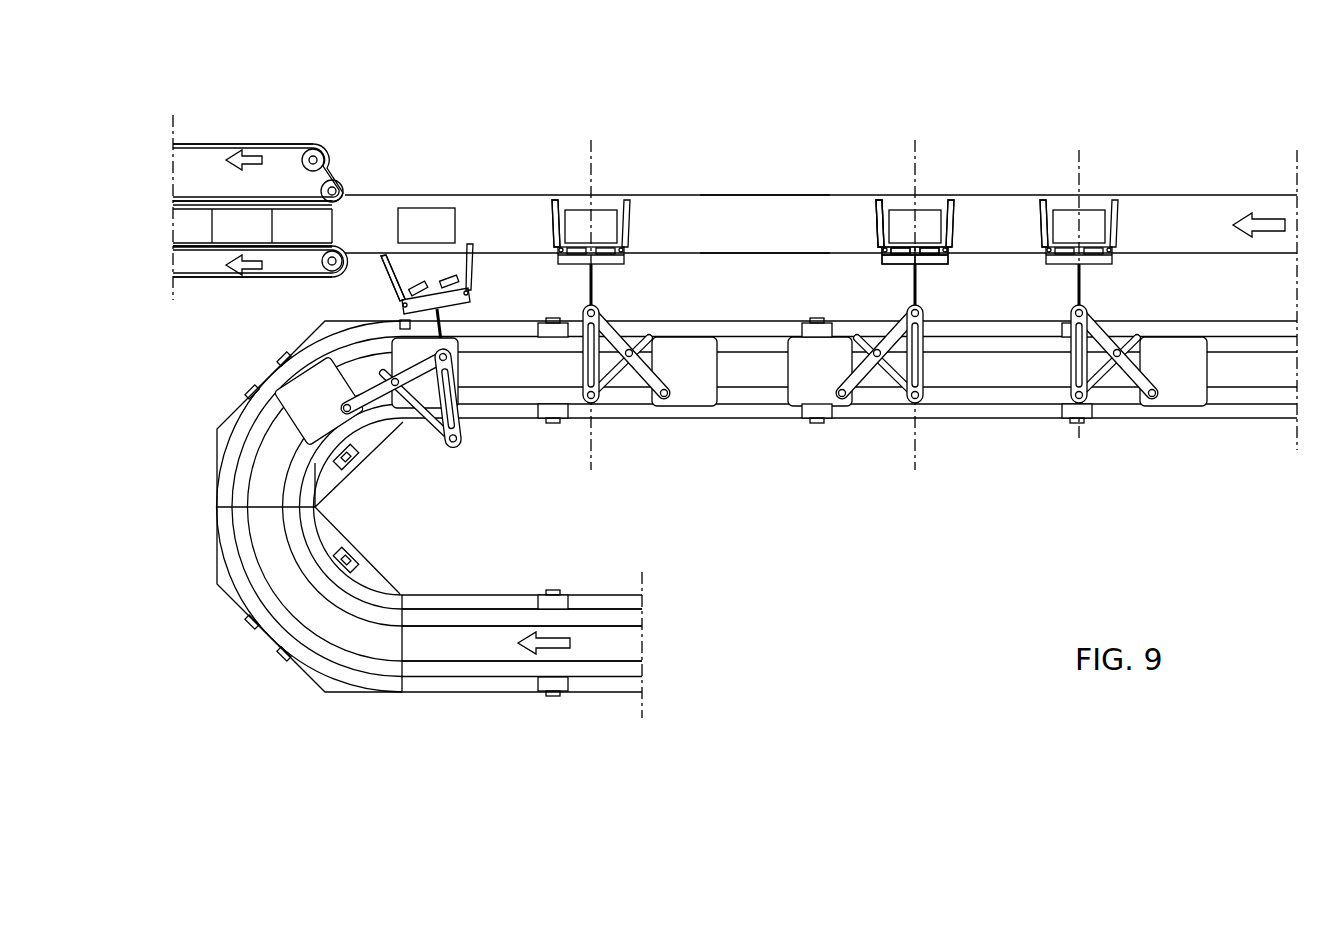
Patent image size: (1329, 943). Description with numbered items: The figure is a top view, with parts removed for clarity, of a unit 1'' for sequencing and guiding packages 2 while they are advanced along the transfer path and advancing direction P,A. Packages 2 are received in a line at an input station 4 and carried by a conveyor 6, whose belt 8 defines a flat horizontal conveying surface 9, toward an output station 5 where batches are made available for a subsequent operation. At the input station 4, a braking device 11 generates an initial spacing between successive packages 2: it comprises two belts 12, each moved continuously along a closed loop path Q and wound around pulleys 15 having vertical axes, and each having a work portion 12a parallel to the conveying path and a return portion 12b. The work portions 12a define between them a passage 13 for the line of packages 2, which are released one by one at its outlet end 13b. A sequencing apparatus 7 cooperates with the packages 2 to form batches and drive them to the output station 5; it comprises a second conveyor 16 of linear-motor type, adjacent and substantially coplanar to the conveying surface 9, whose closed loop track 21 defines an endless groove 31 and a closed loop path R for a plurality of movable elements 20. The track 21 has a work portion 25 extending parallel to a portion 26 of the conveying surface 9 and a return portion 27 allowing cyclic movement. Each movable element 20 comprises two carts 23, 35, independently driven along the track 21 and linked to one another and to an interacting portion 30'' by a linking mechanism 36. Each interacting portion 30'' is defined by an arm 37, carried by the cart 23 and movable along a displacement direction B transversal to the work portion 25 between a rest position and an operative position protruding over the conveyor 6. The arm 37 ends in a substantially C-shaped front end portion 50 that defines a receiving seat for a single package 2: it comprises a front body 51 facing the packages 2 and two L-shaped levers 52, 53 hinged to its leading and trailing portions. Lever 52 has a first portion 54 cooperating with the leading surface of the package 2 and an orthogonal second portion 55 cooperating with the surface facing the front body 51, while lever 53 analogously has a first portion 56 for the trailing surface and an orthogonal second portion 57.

The unit 1'' is at (1203, 103).
The package 2 is at (433, 217).
The input station 4 is at (166, 138).
The output station 5 is at (1226, 215).
The conveyor 6 is at (1182, 218).
The sequencing apparatus 7 is at (590, 700).
The belt 8 is at (765, 205).
The conveying surface 9 is at (801, 222).
The braking device 11 is at (165, 190).
The belt 12 is at (205, 141).
The work portion 12a is at (274, 205).
The return portion 12b is at (190, 143).
The passage 13 is at (190, 226).
The outlet end 13b is at (338, 213).
The pulley 15 is at (320, 153).
The second conveyor 16 is at (357, 697).
The movable element 20 is at (369, 431).
The track 21 is at (622, 672).
The cart 23 is at (413, 402).
The work portion 25 is at (755, 421).
The portion 26 is at (738, 222).
The return portion 27 is at (628, 641).
The interacting portion 30'' is at (779, 236).
The groove 31 is at (605, 634).
The cart 35 is at (304, 392).
The linking mechanism 36 is at (629, 328).
The arm 37 is at (588, 287).
The front end portion 50 is at (382, 252).
The front body 51 is at (893, 265).
The lever 52 is at (942, 239).
The lever 53 is at (881, 221).
The first portion 54 is at (951, 233).
The second portion 55 is at (938, 253).
The first portion 56 is at (889, 243).
The second portion 57 is at (906, 264).
The displacement direction B is at (592, 190).
The path and advancing direction P,A is at (1250, 226).
The closed loop path Q is at (242, 152).
The closed loop path R is at (547, 660).